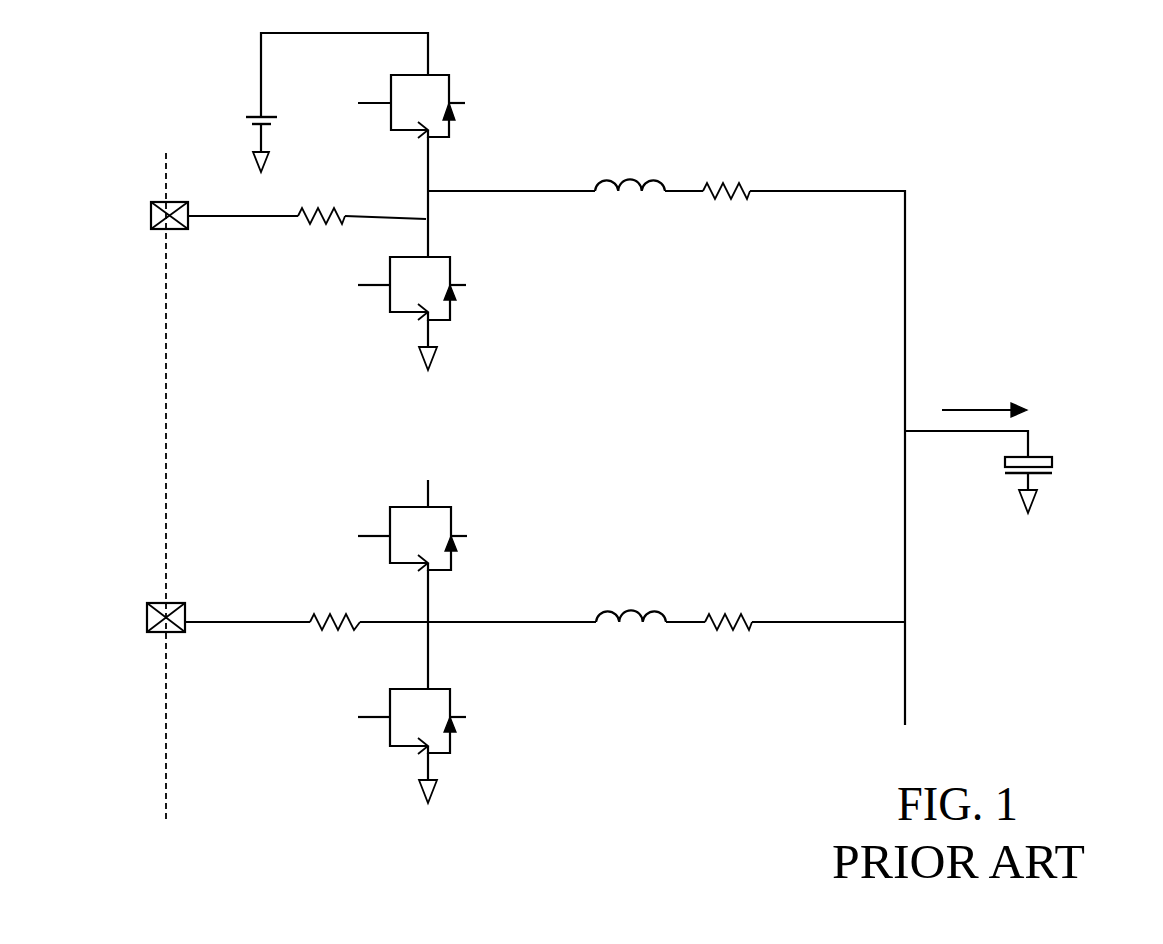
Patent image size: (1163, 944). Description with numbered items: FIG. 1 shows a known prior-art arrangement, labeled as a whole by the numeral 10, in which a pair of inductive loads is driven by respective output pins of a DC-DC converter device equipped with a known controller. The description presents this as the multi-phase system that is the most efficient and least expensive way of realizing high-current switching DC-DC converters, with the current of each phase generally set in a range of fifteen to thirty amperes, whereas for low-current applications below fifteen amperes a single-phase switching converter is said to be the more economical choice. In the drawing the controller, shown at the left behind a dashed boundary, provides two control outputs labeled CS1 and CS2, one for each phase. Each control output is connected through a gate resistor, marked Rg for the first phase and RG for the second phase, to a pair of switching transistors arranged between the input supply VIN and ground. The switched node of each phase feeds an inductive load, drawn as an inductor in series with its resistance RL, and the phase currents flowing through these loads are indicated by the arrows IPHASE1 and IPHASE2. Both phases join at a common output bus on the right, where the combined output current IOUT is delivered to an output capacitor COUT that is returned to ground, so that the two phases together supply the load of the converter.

The prior art two-phase buck converter circuit 10 is at (778, 298).
The controller phase 1 control signal output CS1 is at (123, 211).
The controller phase 2 control signal output CS2 is at (119, 616).
The phase 1 gate resistor Rg is at (321, 200).
The phase 2 gate resistor RG is at (330, 605).
The inductor series resistance RL is at (726, 382).
The input voltage source VIN is at (308, 270).
The output capacitor COUT is at (1054, 480).
The output current IOUT is at (982, 387).
The phase 1 inductor current IPHASE1 is at (616, 157).
The phase 2 inductor current IPHASE2 is at (616, 590).